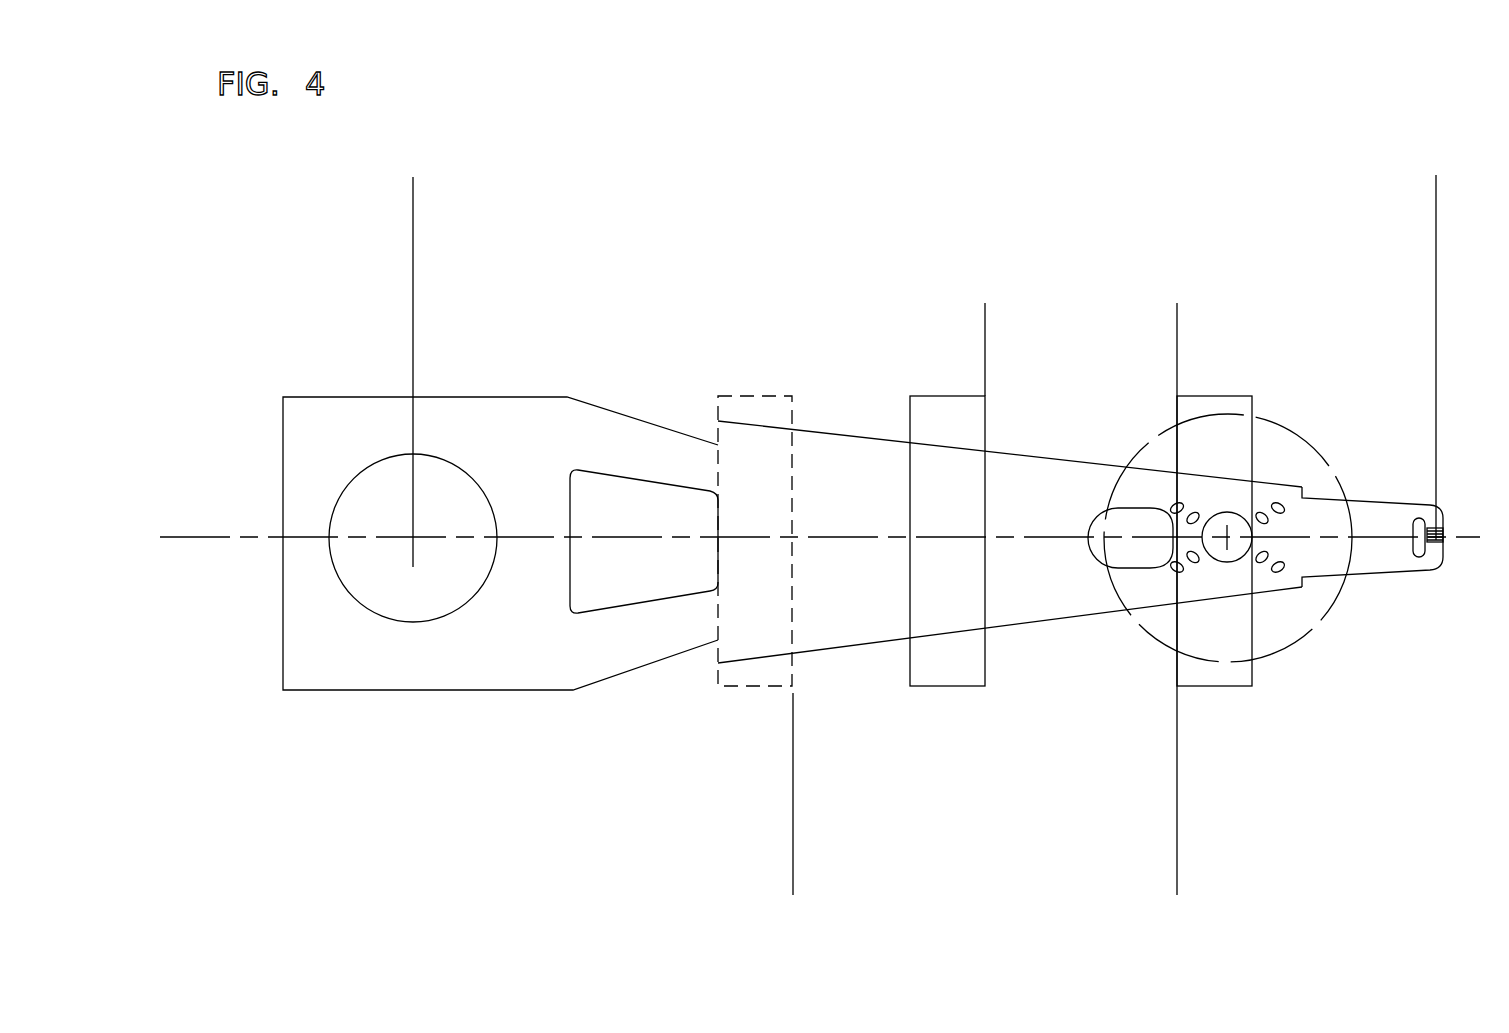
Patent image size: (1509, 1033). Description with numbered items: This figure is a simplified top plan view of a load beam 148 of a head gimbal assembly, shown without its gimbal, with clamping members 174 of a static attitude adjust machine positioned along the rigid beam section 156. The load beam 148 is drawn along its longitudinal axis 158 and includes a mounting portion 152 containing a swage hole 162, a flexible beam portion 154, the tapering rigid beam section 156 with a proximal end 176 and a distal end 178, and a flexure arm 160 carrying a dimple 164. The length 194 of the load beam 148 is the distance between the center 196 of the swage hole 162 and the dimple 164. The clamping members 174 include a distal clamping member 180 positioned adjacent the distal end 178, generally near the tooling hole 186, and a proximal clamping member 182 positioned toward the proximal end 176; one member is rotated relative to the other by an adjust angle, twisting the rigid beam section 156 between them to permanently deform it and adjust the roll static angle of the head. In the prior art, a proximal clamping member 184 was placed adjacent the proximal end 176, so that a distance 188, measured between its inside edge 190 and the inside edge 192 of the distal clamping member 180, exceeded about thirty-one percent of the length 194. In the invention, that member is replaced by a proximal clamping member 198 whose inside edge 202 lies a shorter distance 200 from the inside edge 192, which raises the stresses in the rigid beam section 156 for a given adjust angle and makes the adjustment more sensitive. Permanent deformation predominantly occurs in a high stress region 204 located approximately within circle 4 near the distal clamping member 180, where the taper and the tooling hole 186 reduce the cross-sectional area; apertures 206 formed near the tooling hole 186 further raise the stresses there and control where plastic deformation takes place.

The circle 4 is at (1252, 522).
The load beam 148 is at (362, 243).
The mounting portion 152 is at (303, 675).
The flexible beam portion 154 is at (612, 658).
The rigid beam section 156 is at (975, 580).
The longitudinal axis 158 is at (247, 533).
The flexure arm 160 is at (1374, 454).
The swage hole 162 is at (409, 622).
The dimple 164 is at (1440, 533).
The clamping members 174 is at (973, 532).
The proximal end 176 is at (717, 647).
The distal end 178 is at (1262, 480).
The distal clamping member 180 is at (1208, 582).
The proximal clamping member 182 is at (839, 532).
The prior art proximal clamping member 184 is at (794, 506).
The tooling hole 186 is at (1217, 517).
The distance 188 is at (1177, 855).
The inside edge 190 is at (790, 608).
The inside edge 192 is at (1173, 670).
The length 194 is at (1436, 218).
The center 196 is at (413, 540).
The proximal clamping member 198 is at (966, 507).
The distance 200 is at (985, 337).
The inside edge 202 is at (987, 433).
The high stress region 204 is at (1328, 458).
The apertures 206 is at (1168, 498).